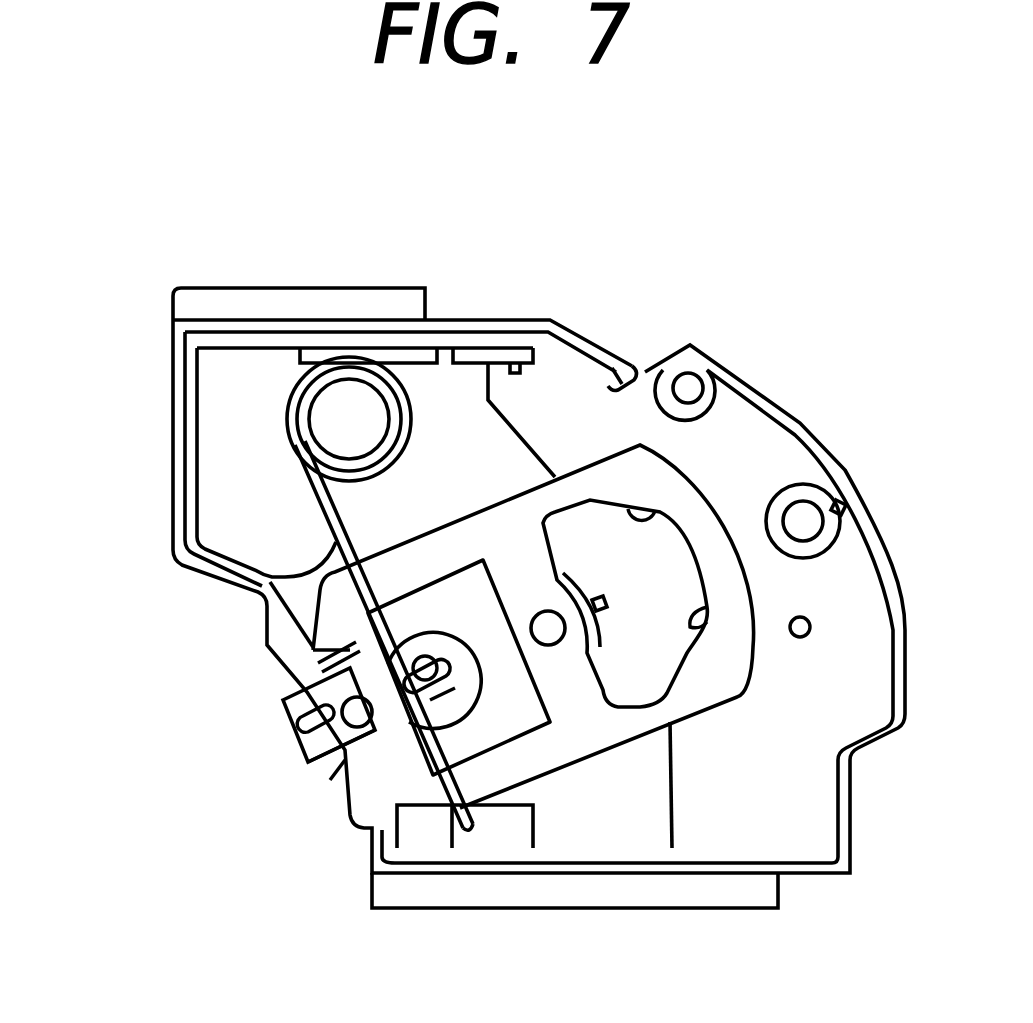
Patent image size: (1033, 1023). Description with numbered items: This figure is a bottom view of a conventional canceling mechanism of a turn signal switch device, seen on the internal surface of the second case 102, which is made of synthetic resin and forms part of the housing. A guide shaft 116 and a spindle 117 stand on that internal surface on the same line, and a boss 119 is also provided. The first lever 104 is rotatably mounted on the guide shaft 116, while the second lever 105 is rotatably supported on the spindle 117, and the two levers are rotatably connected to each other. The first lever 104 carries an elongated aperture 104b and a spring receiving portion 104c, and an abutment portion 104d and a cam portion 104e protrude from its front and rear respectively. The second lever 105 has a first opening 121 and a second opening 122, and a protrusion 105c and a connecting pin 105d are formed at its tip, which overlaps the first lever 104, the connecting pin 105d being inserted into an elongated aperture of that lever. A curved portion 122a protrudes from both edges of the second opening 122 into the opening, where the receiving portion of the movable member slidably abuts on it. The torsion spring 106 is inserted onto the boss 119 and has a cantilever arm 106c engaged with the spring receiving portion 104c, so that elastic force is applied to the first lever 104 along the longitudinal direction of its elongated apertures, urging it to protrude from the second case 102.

The second case 102 is at (172, 358).
The first lever 104 is at (277, 700).
The elongated aperture 104b is at (300, 730).
The spring receiving portion 104c is at (470, 700).
The abutment portion 104d is at (303, 752).
The cam portion 104e is at (466, 660).
The second lever 105 is at (643, 443).
The protrusion 105c is at (278, 640).
The connecting pin 105d is at (323, 770).
The torsion spring 106 is at (288, 433).
The arm 106c is at (372, 830).
The guide shaft 116 is at (428, 636).
The spindle 117 is at (560, 642).
The boss 119 is at (323, 381).
The first opening 121 is at (527, 710).
The second opening 122 is at (683, 565).
The curved portion 122a is at (660, 508).